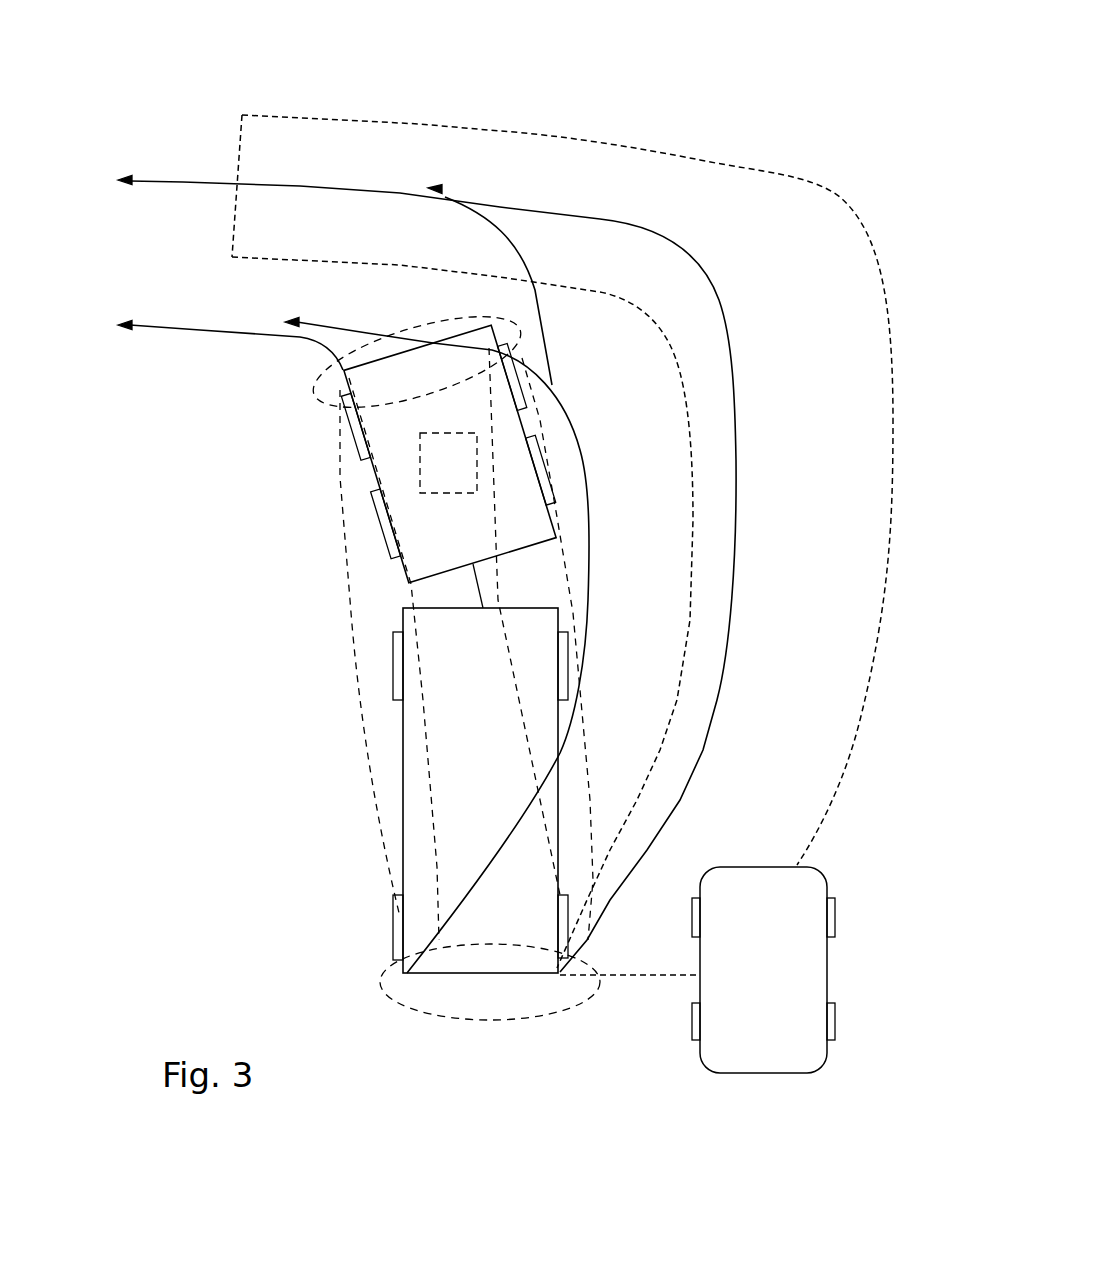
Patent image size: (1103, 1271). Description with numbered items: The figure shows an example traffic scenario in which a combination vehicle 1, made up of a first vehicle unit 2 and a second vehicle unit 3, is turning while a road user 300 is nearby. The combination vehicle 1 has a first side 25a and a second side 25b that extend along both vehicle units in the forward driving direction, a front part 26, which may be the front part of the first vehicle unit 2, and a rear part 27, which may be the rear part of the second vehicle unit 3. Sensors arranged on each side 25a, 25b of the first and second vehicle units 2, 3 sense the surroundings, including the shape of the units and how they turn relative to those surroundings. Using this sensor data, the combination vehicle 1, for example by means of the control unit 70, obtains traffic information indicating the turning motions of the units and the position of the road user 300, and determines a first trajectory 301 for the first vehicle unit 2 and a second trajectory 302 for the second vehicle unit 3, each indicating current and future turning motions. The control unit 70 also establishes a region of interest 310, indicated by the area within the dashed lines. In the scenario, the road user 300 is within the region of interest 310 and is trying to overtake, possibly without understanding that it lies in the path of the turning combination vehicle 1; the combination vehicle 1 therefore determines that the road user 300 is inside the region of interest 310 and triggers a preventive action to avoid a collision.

The combination vehicle 1 is at (228, 702).
The first vehicle unit 2 is at (377, 467).
The second vehicle unit 3 is at (403, 733).
The first side 25a is at (350, 625).
The second side 25b is at (563, 557).
The front part 26 is at (313, 397).
The rear part 27 is at (380, 977).
The control unit 70 is at (462, 481).
The road user 300 is at (793, 981).
The first trajectory 301 is at (183, 183).
The second trajectory 302 is at (488, 197).
The region of interest 310 is at (258, 113).